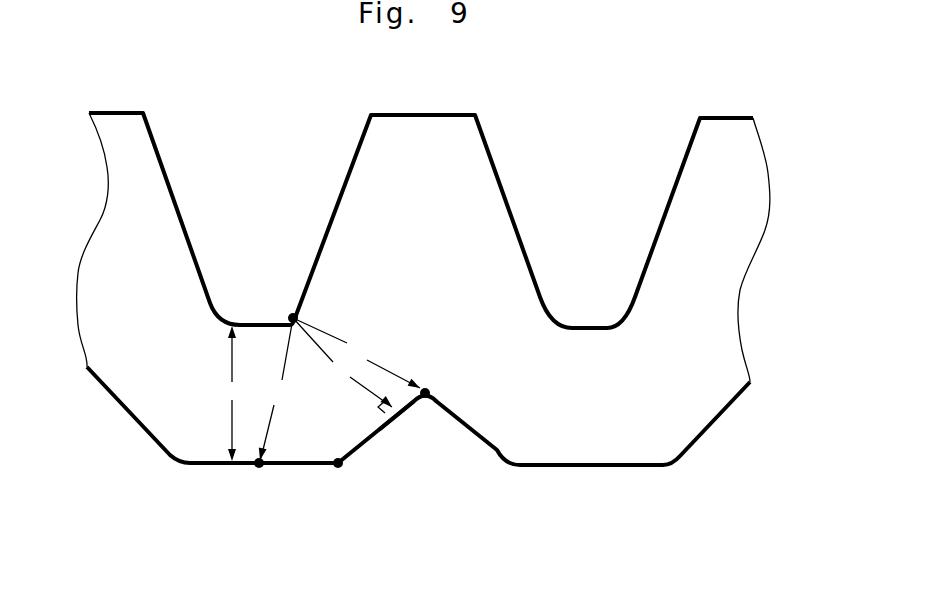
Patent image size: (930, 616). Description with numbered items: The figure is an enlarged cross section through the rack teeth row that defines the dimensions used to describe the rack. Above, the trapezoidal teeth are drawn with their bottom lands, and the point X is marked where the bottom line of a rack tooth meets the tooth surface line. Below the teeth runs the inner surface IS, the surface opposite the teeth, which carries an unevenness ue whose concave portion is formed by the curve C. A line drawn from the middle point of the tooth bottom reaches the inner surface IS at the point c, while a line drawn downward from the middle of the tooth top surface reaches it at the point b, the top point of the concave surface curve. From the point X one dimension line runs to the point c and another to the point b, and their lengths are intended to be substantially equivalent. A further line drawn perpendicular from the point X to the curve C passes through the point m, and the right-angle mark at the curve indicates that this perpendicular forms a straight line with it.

The point X is at (285, 308).
The point c is at (257, 468).
The point b is at (433, 403).
The curve C is at (364, 442).
The point m is at (392, 419).
The inner surface IS is at (724, 410).
The unevenness ue is at (543, 488).